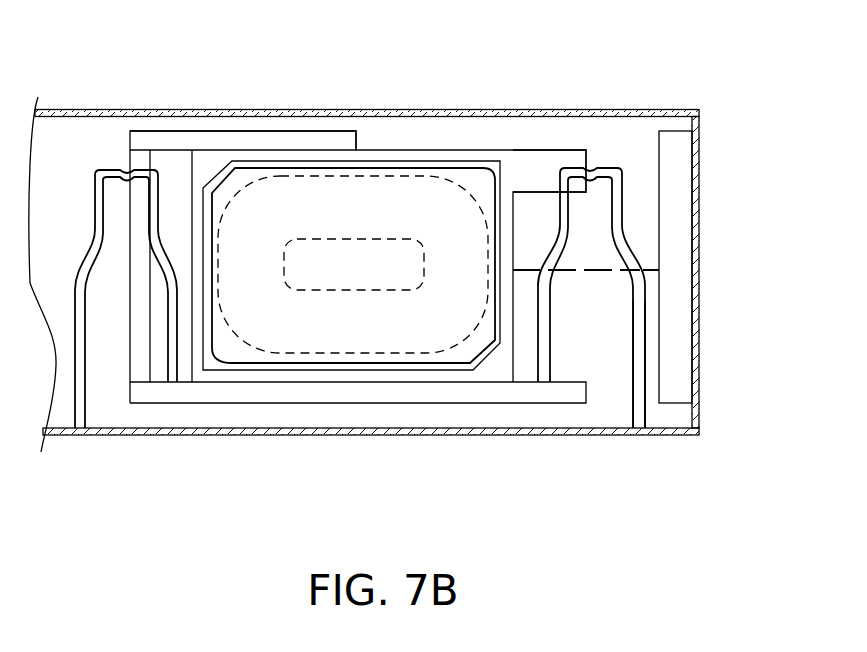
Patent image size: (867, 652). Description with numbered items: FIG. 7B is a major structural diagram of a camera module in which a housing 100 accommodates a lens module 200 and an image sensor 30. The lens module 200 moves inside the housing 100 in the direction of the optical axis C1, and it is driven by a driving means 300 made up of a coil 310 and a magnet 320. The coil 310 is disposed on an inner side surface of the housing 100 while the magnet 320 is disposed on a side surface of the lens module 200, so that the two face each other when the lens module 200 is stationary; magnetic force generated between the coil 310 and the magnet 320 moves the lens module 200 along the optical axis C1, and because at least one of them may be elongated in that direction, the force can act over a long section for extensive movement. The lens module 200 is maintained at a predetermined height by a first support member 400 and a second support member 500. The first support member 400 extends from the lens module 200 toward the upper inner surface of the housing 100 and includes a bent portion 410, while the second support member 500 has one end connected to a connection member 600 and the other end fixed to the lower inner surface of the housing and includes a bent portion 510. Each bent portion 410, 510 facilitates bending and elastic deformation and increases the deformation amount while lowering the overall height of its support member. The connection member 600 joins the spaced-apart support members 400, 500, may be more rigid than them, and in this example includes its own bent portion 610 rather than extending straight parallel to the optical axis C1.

The housing 100 is at (470, 109).
The image sensor 30 is at (677, 144).
The lens module 200 is at (423, 150).
The driving means 300 is at (351, 355).
The coil 310 is at (398, 353).
The magnet 320 is at (460, 351).
The first support member 400 is at (543, 348).
The bent portion 410 is at (538, 268).
The second support member 500 is at (637, 353).
The bent portion 510 is at (637, 238).
The connection member 600 is at (110, 171).
The bent portion 610 is at (127, 176).
The optical axis C1 is at (652, 268).